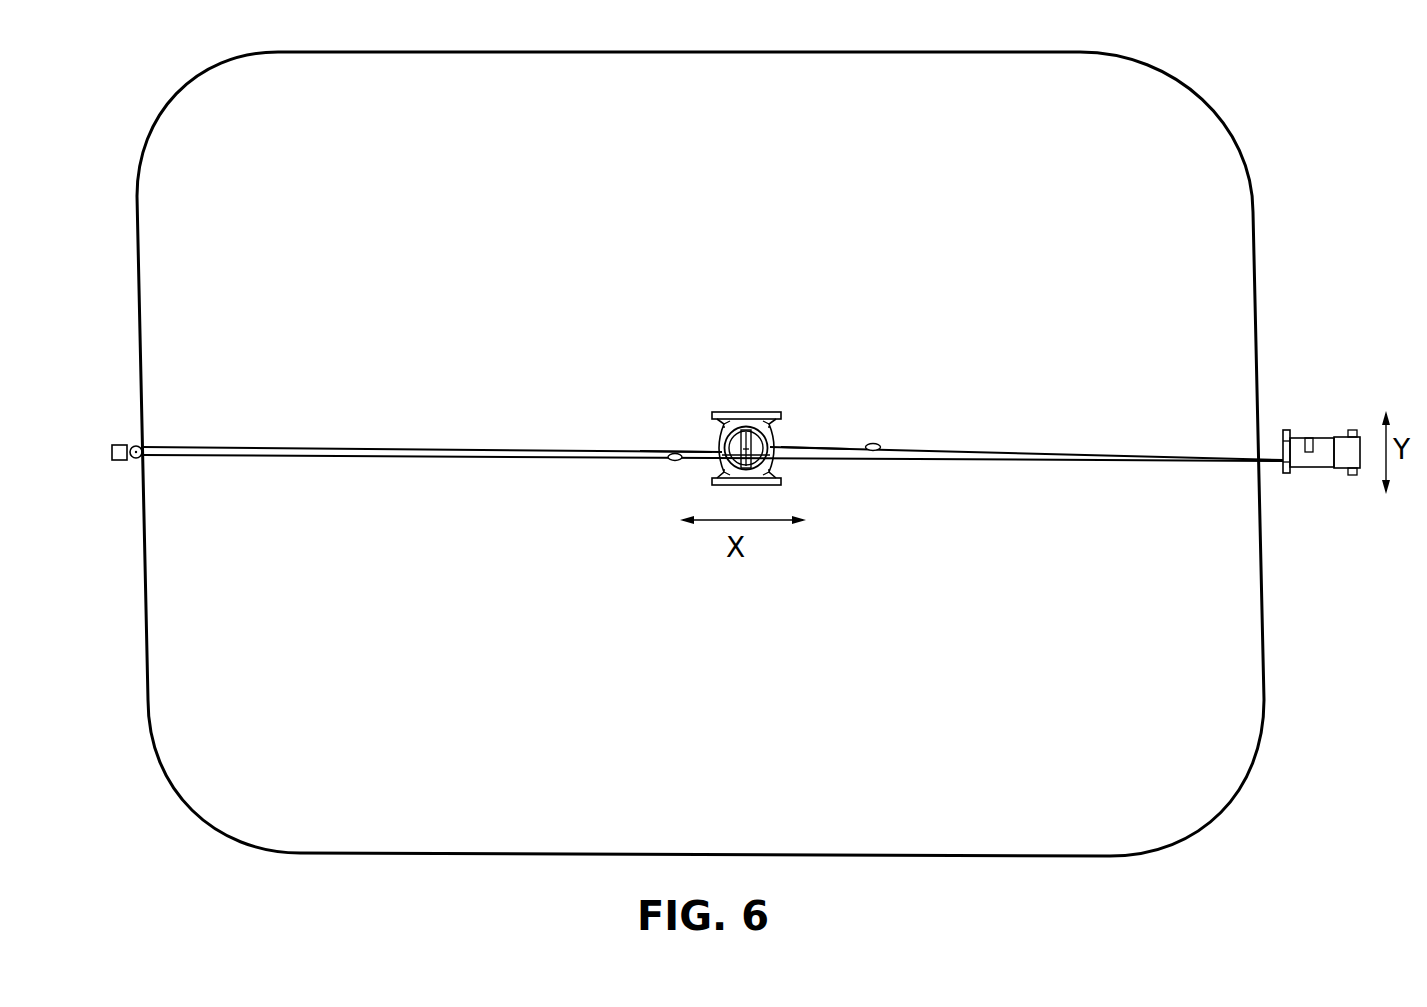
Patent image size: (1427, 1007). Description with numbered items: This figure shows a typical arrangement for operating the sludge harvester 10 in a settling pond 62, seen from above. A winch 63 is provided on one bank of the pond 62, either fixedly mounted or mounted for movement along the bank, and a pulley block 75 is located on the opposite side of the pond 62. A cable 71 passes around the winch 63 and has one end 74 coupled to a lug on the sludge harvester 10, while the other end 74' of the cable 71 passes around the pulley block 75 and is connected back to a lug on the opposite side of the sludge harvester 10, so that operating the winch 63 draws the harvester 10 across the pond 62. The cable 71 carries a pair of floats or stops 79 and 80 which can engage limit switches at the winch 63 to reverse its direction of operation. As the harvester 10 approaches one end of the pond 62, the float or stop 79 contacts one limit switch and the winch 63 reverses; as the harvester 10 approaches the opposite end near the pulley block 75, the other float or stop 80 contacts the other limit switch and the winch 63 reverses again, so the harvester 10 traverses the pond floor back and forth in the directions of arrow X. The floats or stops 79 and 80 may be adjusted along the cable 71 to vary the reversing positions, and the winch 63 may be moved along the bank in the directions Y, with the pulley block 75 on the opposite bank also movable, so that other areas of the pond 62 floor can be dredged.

The sludge harvester 10 is at (792, 378).
The settling pond 62 is at (1190, 122).
The winch 63 is at (1352, 412).
The cable 71 is at (1040, 447).
The end of the cable 74 is at (815, 426).
The other end of the cable 74' is at (676, 424).
The pulley block 75 is at (100, 482).
The float or stop 79 is at (880, 442).
The float or stop 80 is at (674, 462).